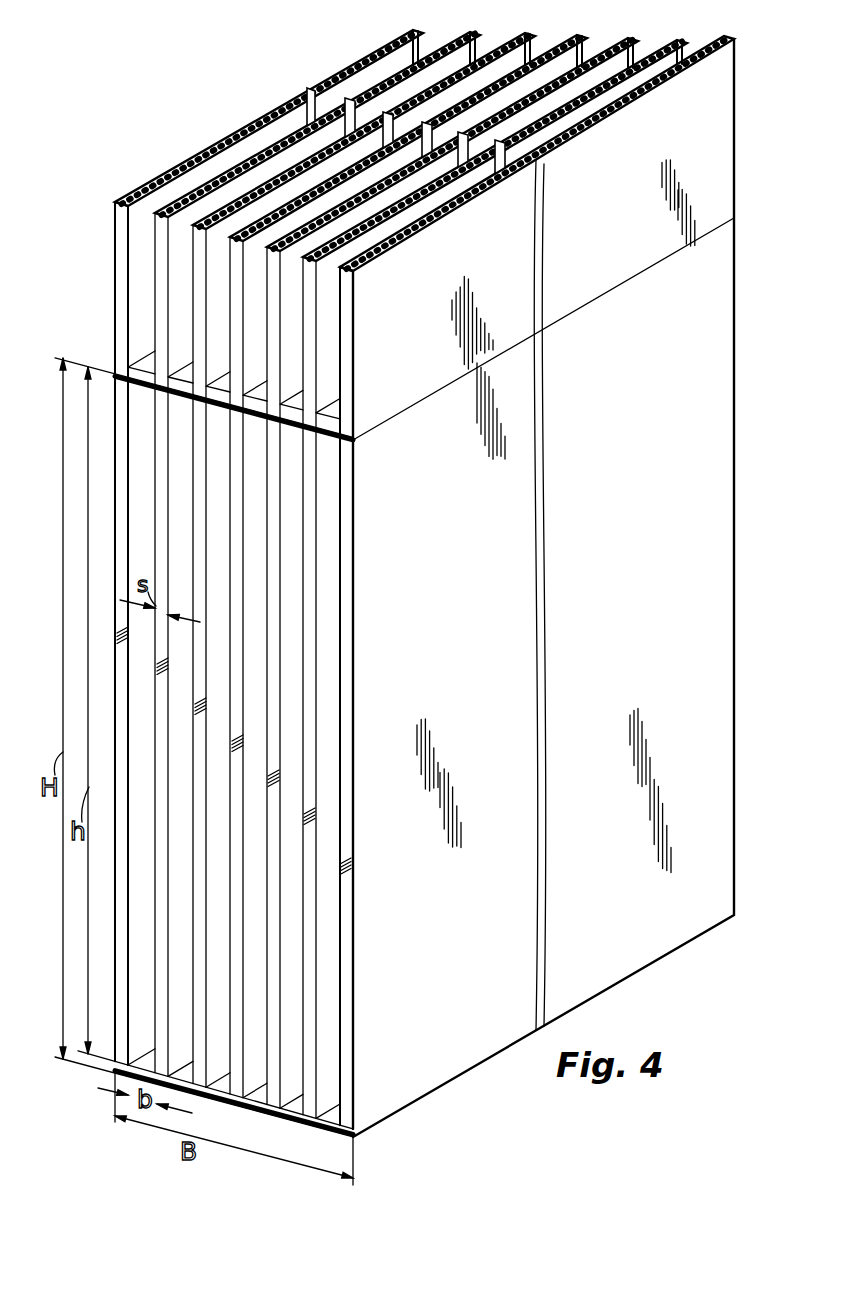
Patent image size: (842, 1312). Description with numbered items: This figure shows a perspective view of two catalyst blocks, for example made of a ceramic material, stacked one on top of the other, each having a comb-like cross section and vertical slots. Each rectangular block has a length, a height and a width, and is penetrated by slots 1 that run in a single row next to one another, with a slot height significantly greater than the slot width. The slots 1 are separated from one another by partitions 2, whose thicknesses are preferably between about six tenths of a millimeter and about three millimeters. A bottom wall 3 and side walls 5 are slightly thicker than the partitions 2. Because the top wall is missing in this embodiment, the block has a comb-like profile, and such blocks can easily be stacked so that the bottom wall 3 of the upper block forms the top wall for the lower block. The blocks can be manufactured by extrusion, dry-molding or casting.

The slots 1 is at (173, 323).
The partitions 2 is at (197, 257).
The bottom wall 3 is at (218, 402).
The side walls 5 is at (118, 290).